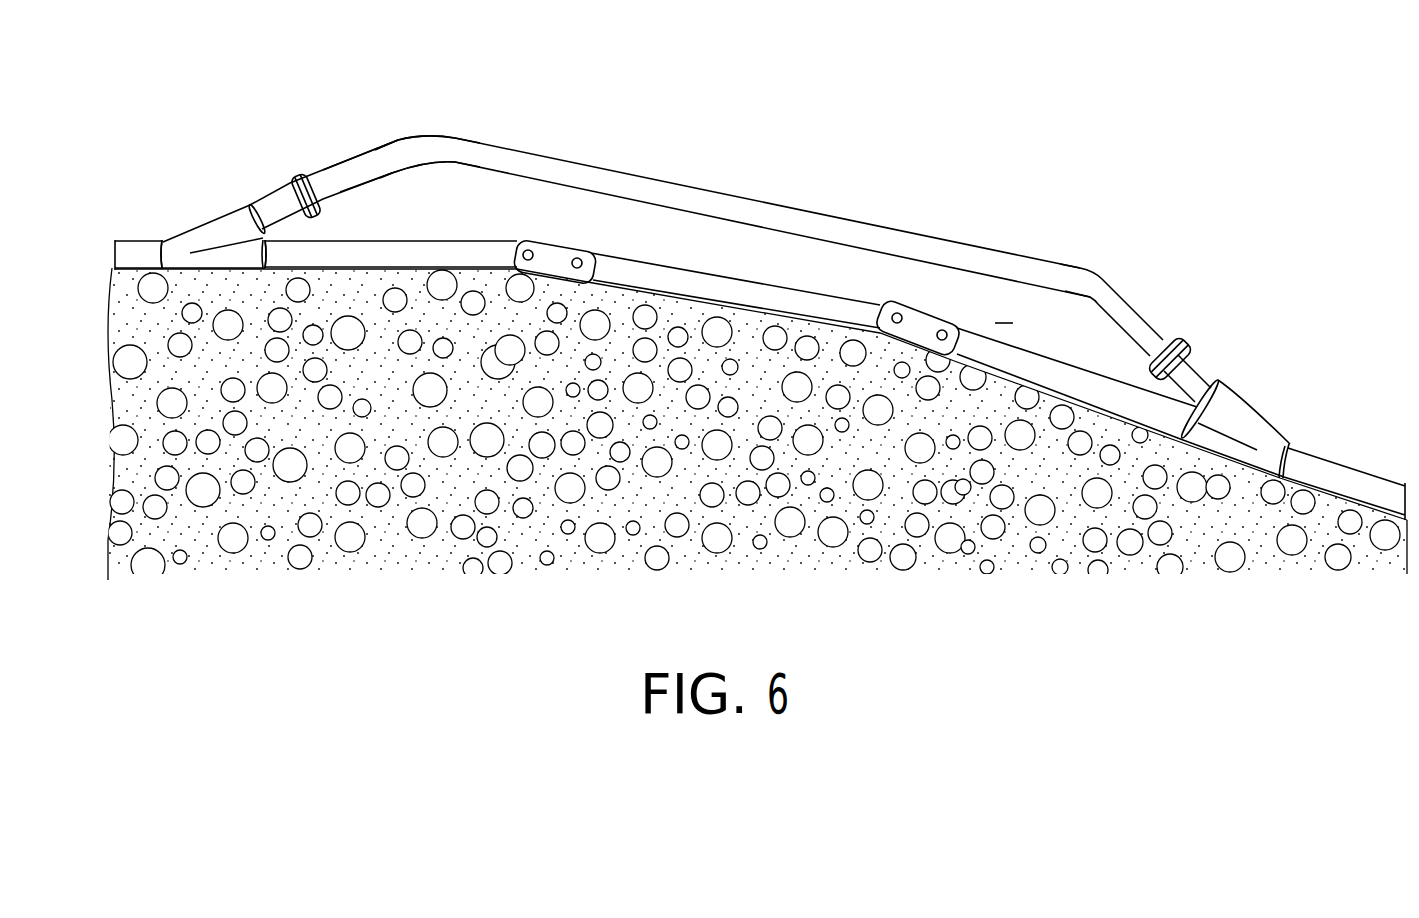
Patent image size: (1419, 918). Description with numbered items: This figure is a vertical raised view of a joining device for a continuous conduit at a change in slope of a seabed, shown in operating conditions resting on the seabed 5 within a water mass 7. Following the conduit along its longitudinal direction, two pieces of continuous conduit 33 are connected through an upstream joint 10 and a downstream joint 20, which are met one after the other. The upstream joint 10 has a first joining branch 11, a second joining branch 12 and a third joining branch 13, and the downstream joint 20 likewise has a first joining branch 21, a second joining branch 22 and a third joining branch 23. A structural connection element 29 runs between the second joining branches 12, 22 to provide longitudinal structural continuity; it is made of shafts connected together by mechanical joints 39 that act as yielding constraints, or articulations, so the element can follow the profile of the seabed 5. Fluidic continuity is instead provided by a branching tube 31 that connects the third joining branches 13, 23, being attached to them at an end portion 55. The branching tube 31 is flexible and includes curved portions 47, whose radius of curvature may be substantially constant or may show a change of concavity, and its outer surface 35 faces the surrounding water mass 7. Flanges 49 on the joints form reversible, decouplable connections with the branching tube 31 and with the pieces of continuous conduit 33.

The seabed 5 is at (817, 327).
The water mass 7 is at (1004, 310).
The upstream joint 10 is at (205, 228).
The first joining branch 11 is at (167, 243).
The second joining branch 12 is at (230, 257).
The third joining branch 13 is at (252, 204).
The downstream joint 20 is at (1252, 437).
The first joining branch 21 is at (1280, 462).
The second joining branch 22 is at (1220, 422).
The third joining branch 23 is at (1223, 400).
The structural connection element 29 is at (418, 243).
The branching tube 31 is at (577, 165).
The piece of continuous conduit 33 is at (137, 253).
The outer surface 35 is at (715, 187).
The mechanical joint 39 is at (572, 240).
The curved portion 47 is at (450, 132).
The flange 49 is at (300, 178).
The end portion 55 is at (377, 157).